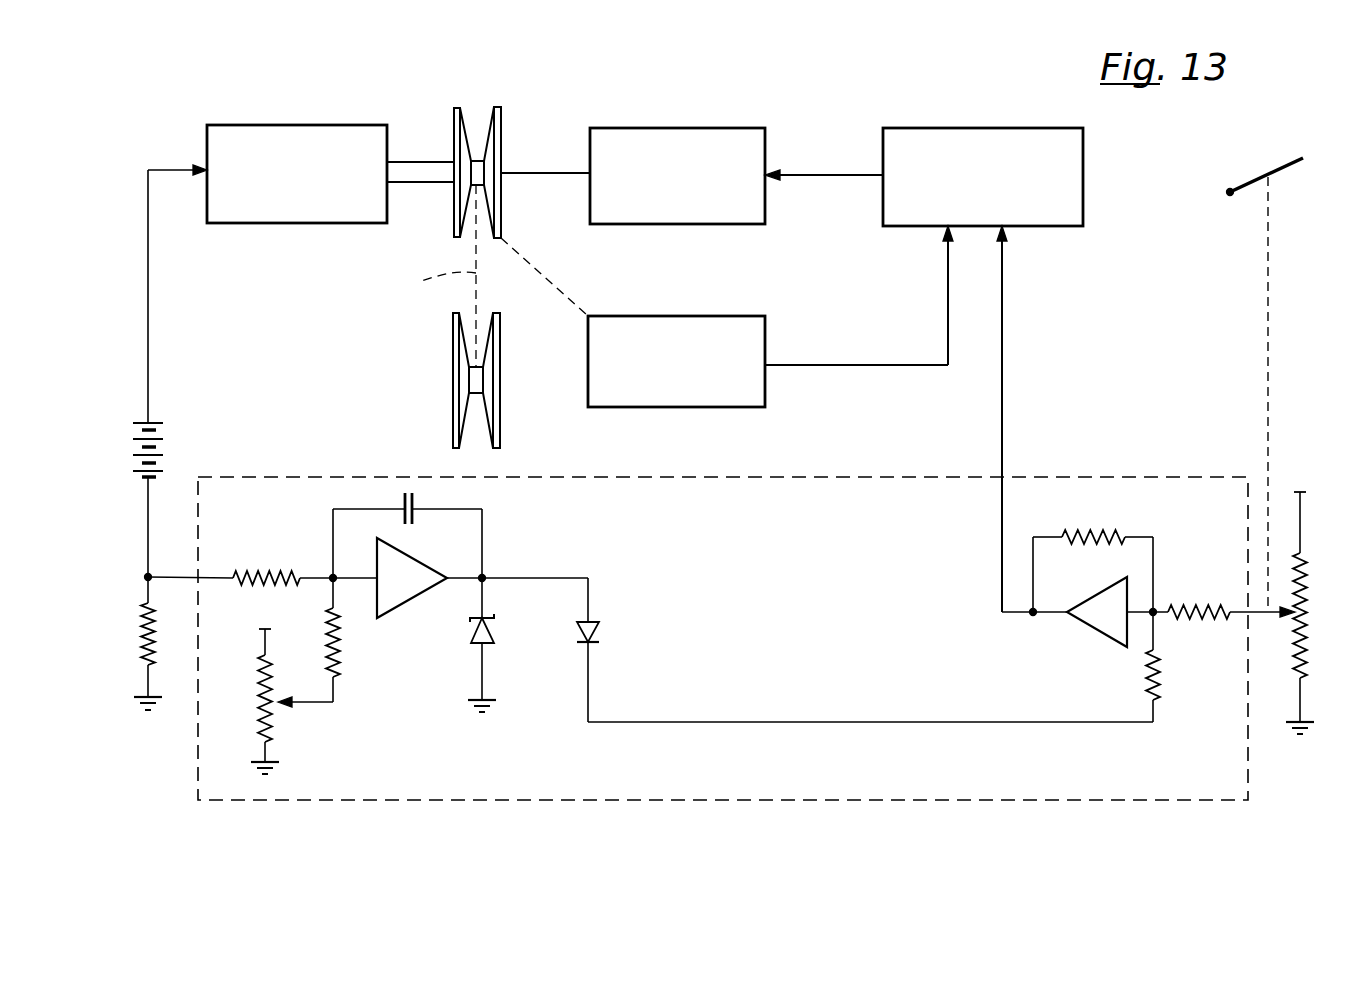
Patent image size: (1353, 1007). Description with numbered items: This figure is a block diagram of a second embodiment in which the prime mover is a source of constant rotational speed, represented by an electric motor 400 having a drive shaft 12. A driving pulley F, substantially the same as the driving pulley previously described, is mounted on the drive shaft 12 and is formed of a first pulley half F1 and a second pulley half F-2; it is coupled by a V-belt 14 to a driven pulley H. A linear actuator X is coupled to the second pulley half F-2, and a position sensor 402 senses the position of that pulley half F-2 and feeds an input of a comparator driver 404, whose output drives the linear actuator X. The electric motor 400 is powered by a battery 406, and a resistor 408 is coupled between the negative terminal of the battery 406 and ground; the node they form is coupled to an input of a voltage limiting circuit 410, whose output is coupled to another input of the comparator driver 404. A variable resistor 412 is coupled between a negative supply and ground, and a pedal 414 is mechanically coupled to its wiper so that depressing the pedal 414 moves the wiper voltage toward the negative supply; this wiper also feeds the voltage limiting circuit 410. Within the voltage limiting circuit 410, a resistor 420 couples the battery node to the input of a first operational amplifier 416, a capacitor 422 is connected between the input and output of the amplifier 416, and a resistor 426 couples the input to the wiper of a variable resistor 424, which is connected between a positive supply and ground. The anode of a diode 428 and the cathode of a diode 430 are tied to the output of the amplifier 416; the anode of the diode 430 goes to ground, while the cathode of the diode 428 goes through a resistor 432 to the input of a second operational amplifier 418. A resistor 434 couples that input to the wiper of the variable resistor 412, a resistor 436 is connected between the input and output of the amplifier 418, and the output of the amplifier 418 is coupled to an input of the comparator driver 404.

The electric motor 400 is at (310, 125).
The drive shaft 12 is at (422, 162).
The first pulley half of driving pulley F1 is at (458, 108).
The driving pulley F is at (500, 108).
The second pulley half F-2 is at (502, 128).
The V-belt 14 is at (491, 276).
The driven pulley H is at (453, 385).
The linear actuator X is at (730, 128).
The comparator driver circuit 404 is at (985, 128).
The position sensor 402 is at (745, 407).
The battery 406 is at (160, 423).
The resistor 408 is at (143, 635).
The voltage limiting circuit 410 is at (675, 800).
The variable resistor 412 is at (1300, 672).
The pedal 414 is at (1255, 177).
The operational amplifier 416 is at (415, 598).
The operational amplifier 418 is at (1080, 622).
The resistor 420 is at (272, 568).
The capacitor 422 is at (414, 497).
The variable resistor 424 is at (272, 727).
The resistor 426 is at (340, 660).
The diode 428 is at (601, 634).
The diode 430 is at (494, 617).
The resistor 432 is at (1160, 700).
The resistor 434 is at (1205, 605).
The resistor 436 is at (1075, 535).